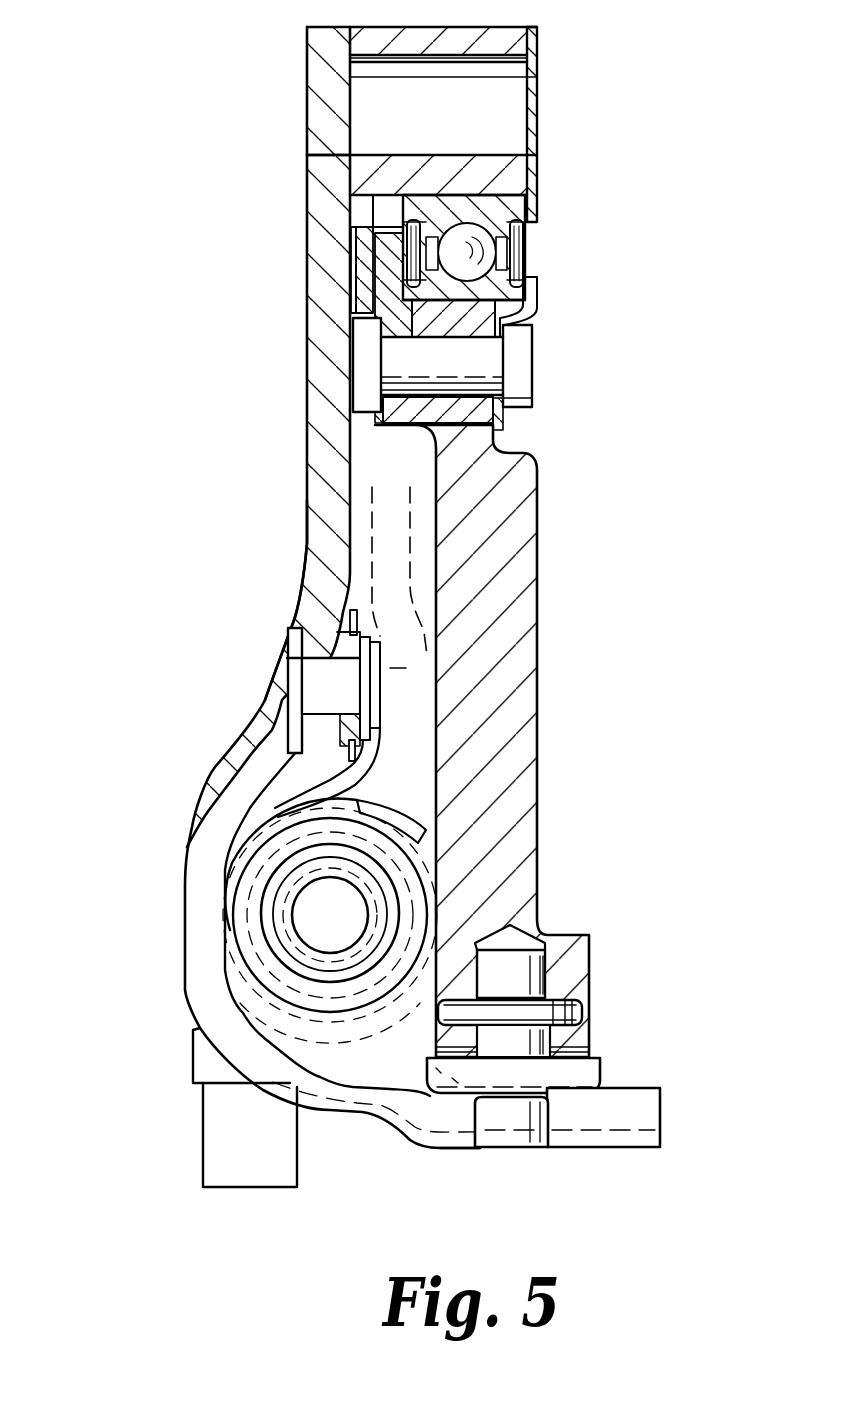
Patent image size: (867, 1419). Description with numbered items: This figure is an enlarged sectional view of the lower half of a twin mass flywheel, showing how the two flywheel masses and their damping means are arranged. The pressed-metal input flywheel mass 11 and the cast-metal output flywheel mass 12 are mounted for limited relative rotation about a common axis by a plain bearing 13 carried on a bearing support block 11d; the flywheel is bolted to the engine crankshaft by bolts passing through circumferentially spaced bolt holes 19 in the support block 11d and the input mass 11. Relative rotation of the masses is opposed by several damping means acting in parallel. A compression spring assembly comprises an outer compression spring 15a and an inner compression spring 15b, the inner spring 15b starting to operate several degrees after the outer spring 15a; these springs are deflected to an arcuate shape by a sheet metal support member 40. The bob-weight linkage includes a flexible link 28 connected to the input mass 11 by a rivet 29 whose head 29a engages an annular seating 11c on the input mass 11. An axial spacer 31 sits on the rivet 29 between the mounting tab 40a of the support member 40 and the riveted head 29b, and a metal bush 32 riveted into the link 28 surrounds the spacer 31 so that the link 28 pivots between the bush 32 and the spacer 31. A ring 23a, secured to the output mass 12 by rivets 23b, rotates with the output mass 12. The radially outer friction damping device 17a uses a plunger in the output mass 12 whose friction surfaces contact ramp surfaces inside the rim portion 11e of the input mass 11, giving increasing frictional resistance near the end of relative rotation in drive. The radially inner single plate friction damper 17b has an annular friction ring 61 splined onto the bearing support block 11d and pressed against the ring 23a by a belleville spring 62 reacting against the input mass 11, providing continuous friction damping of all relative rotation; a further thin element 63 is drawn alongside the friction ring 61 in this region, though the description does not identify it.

The input flywheel mass 11 is at (323, 213).
The annular seating 11c is at (307, 543).
The bearing support block 11d is at (503, 173).
The rim portion 11e is at (640, 1122).
The output flywheel mass 12 is at (497, 602).
The plain bearing 13 is at (527, 213).
The outer compression spring 15a is at (255, 857).
The inner compression spring 15b is at (273, 933).
The radially outer friction damping device 17a is at (548, 1079).
The single plate friction damper 17b is at (337, 260).
The bolt holes 19 is at (480, 57).
The ring 23a is at (520, 291).
The rivets 23b is at (523, 355).
The flexible link 28 is at (357, 618).
The rivet 29 is at (287, 657).
The head 29a is at (300, 708).
The riveted head 29b is at (375, 688).
The axial spacer 31 is at (380, 660).
The metal bush 32 is at (372, 640).
The sheet metal support member 40 is at (372, 790).
The mounting tab 40a is at (385, 725).
The annular friction ring 61 is at (353, 298).
The belleville spring 62 is at (307, 155).
The spacer ring 63 is at (355, 282).